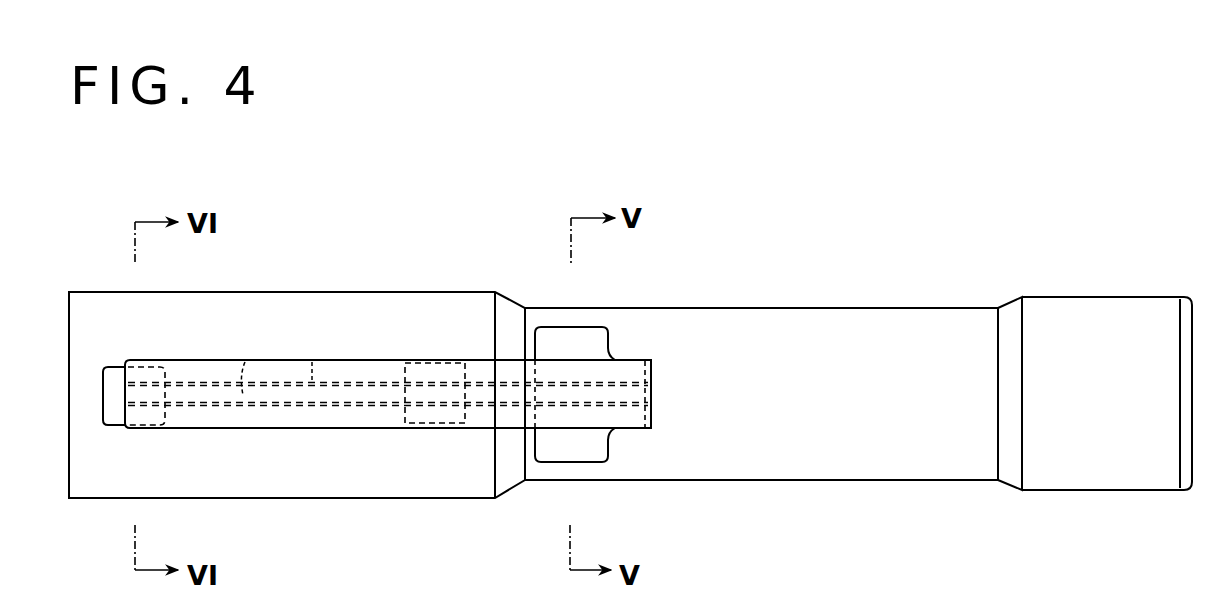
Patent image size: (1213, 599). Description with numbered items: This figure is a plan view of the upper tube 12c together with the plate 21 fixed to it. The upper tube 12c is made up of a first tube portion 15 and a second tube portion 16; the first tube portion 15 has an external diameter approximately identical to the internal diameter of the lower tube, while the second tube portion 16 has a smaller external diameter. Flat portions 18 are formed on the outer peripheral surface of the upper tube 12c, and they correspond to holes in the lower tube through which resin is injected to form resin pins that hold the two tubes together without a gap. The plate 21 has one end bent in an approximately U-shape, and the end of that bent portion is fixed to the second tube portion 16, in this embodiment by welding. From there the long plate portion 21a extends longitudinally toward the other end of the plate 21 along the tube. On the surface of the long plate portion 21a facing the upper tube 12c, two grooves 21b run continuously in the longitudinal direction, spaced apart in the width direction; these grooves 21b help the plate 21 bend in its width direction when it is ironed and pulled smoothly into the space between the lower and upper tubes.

The upper tube 12c is at (1095, 295).
The first tube portion 15 is at (362, 292).
The second tube portion 16 is at (840, 308).
The flat portions 18 is at (116, 368).
The plate 21 is at (345, 431).
The long plate portion 21a is at (252, 430).
The grooves 21b is at (302, 360).